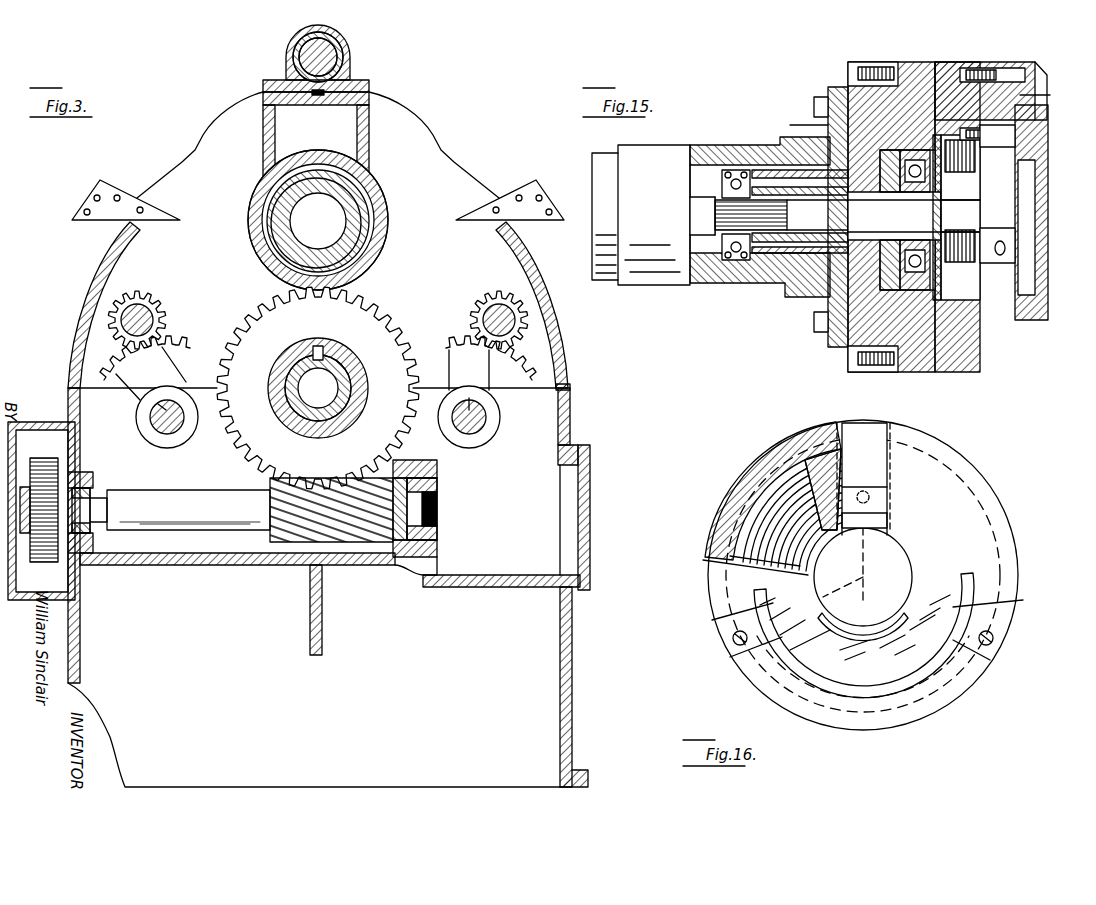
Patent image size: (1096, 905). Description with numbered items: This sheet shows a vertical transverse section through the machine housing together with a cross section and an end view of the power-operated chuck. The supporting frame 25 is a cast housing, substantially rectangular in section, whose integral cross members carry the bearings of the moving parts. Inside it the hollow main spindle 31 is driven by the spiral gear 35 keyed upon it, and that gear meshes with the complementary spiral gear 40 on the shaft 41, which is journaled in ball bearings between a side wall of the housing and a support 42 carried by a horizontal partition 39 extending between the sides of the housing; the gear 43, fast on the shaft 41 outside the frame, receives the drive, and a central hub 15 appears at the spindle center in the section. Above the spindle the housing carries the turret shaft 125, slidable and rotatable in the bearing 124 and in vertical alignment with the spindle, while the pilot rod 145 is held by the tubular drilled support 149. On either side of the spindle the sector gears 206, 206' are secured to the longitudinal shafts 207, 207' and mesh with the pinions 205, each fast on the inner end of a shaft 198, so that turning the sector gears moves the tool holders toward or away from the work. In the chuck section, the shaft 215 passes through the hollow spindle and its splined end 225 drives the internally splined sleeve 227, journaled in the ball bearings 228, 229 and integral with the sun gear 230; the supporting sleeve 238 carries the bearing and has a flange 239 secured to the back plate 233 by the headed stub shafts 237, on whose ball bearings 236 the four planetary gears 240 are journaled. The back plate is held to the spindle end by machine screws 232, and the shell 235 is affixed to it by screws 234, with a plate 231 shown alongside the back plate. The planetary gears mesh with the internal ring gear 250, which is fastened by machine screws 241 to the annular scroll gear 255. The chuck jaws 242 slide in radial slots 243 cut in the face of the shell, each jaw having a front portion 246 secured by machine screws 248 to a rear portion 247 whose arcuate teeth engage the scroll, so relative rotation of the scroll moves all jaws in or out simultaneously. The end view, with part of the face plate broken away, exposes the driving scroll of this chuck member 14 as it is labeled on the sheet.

In FIG. 3, the pilot rod 145 is at (330, 50).
In FIG. 3, the tubular drilled support 149 is at (348, 68).
In FIG. 3, the bearing 124 is at (252, 248).
In FIG. 3, the shaft 125 is at (360, 224).
In FIG. 3, the spiral gear 35 is at (373, 296).
In FIG. 3, the shaft 31 is at (398, 330).
In FIG. 15, the shaft 31 is at (725, 287).
In FIG. 3, the shaft 15 is at (300, 386).
In FIG. 3, the pinion 205 is at (160, 306).
In FIG. 3, the shaft 198 is at (150, 322).
In FIG. 3, the sector gear 206 is at (159, 368).
In FIG. 3, the shaft 207 is at (156, 426).
In FIG. 3, the sector gear 206' is at (496, 363).
In FIG. 3, the shaft 207' is at (485, 421).
In FIG. 3, the gear 43 is at (42, 458).
In FIG. 3, the shaft 41 is at (200, 500).
In FIG. 3, the spiral gear 40 is at (275, 536).
In FIG. 3, the support 42 is at (430, 470).
In FIG. 3, the horizontal partition 39 is at (340, 566).
In FIG. 3, the supporting frame 25 is at (575, 650).
In FIG. 15, the shaft 215 is at (696, 205).
In FIG. 15, the ball bearing 228 is at (690, 212).
In FIG. 15, the splined end 225 is at (818, 210).
In FIG. 15, the supporting sleeve 238 is at (812, 233).
In FIG. 15, the flange 239 is at (838, 200).
In FIG. 15, the sleeve 227 is at (890, 195).
In FIG. 15, the planetary gears 240 is at (815, 325).
In FIG. 15, the sun gear 230 is at (915, 210).
In FIG. 15, the ball bearing 229 is at (960, 216).
In FIG. 15, the stub shafts 237 is at (822, 325).
In FIG. 15, the ball bearings 236 is at (975, 160).
In FIG. 15, the machine screws 232 is at (814, 100).
In FIG. 15, the internal ring gear 250 is at (985, 345).
In FIG. 15, the plate 231 is at (835, 340).
In FIG. 15, the back plate 233 is at (830, 360).
In FIG. 15, the screws 234 is at (850, 66).
In FIG. 15, the shell 235 is at (930, 70).
In FIG. 16, the shell 235 is at (730, 535).
In FIG. 15, the machine screws 241 is at (950, 62).
In FIG. 15, the machine screws 248 is at (1000, 68).
In FIG. 15, the rear jaw portion 247 is at (1050, 83).
In FIG. 15, the front jaw portion 246 is at (1015, 112).
In FIG. 15, the scroll gear 255 is at (1015, 290).
In FIG. 16, the scroll gear 255 is at (765, 470).
In FIG. 16, the chuck 14 is at (858, 430).
In FIG. 16, the chuck jaws 242 is at (875, 480).
In FIG. 16, the radial slots 243 is at (890, 520).